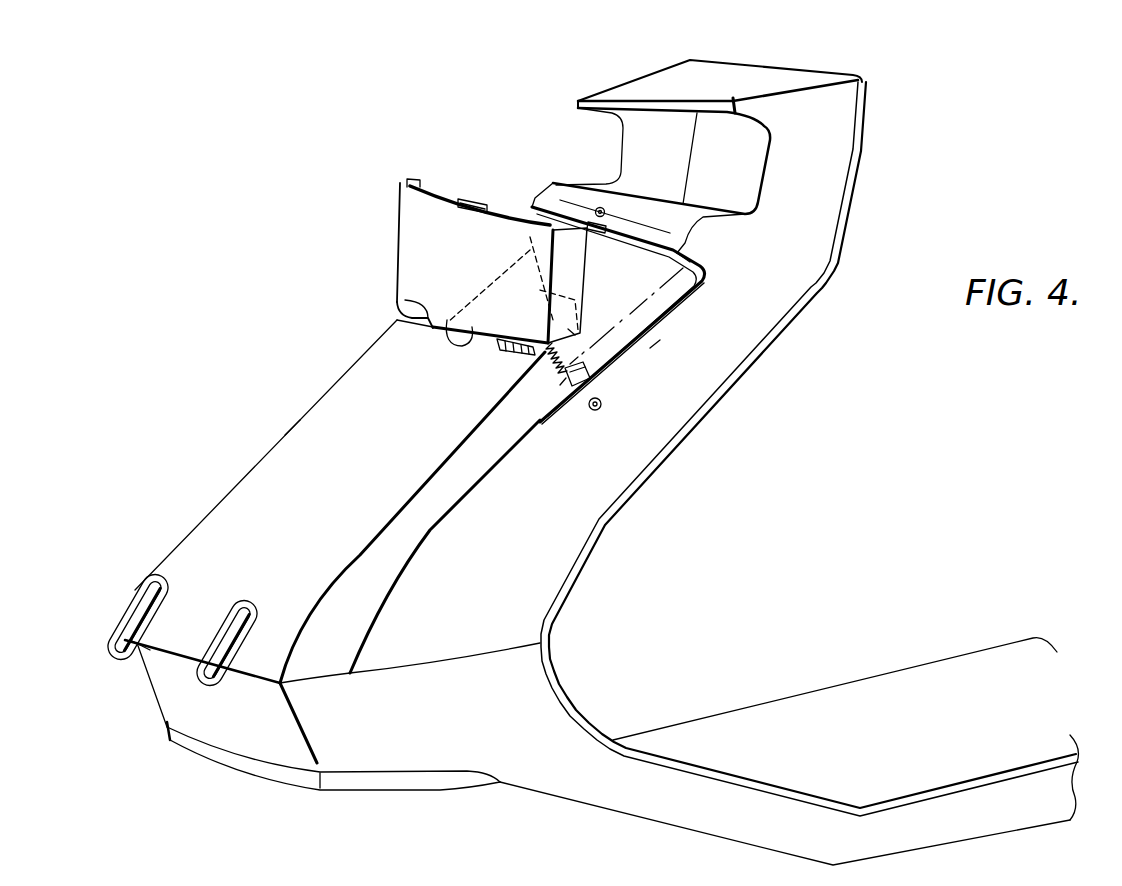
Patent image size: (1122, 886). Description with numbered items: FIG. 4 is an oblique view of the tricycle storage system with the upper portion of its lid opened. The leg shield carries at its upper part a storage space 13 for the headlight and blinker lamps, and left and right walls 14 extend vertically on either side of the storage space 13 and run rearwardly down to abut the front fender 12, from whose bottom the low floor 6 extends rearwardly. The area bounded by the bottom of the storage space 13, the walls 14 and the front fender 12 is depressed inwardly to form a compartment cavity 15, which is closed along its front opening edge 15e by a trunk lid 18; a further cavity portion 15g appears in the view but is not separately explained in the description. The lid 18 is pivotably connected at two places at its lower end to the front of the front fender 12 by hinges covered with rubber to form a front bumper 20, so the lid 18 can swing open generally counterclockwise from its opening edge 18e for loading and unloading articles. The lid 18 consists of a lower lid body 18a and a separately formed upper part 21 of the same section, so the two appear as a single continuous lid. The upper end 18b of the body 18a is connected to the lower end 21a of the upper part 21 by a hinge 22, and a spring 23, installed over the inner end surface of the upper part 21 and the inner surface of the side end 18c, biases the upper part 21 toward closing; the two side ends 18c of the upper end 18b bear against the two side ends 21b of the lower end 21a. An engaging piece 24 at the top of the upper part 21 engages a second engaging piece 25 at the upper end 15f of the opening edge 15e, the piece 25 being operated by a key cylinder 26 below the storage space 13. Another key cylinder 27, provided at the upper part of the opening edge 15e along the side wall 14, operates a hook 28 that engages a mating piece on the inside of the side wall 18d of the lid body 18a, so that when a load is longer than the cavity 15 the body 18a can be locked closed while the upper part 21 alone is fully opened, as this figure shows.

The floor 6 is at (848, 698).
The front fender 12 is at (260, 742).
The storage space 13 is at (650, 110).
The left and right walls 14 is at (683, 412).
The compartment cavity 15 is at (676, 282).
The front opening edge 15e is at (680, 300).
The upper end of the opening edge 15f is at (640, 233).
The frame lower wall 15g is at (607, 357).
The trunk lid 18 is at (250, 482).
The lid body 18a is at (302, 434).
The upper end of the lid body 18b is at (400, 287).
The side ends of the upper end 18c is at (567, 375).
The side wall of the lid body 18d is at (460, 492).
The opening edge of the lid 18e is at (150, 650).
The front bumper 20 is at (143, 580).
The upper part of the trunk lid 21 is at (417, 213).
The lower end of the upper part 21a is at (452, 318).
The side ends of the lower end 21b is at (573, 333).
The hinge 22 is at (503, 348).
The spring 23 is at (520, 355).
The engaging piece 24 is at (474, 198).
The second engaging piece 25 is at (596, 234).
The key cylinder 26 is at (596, 210).
The key cylinder 27 is at (595, 412).
The hook 28 is at (595, 378).